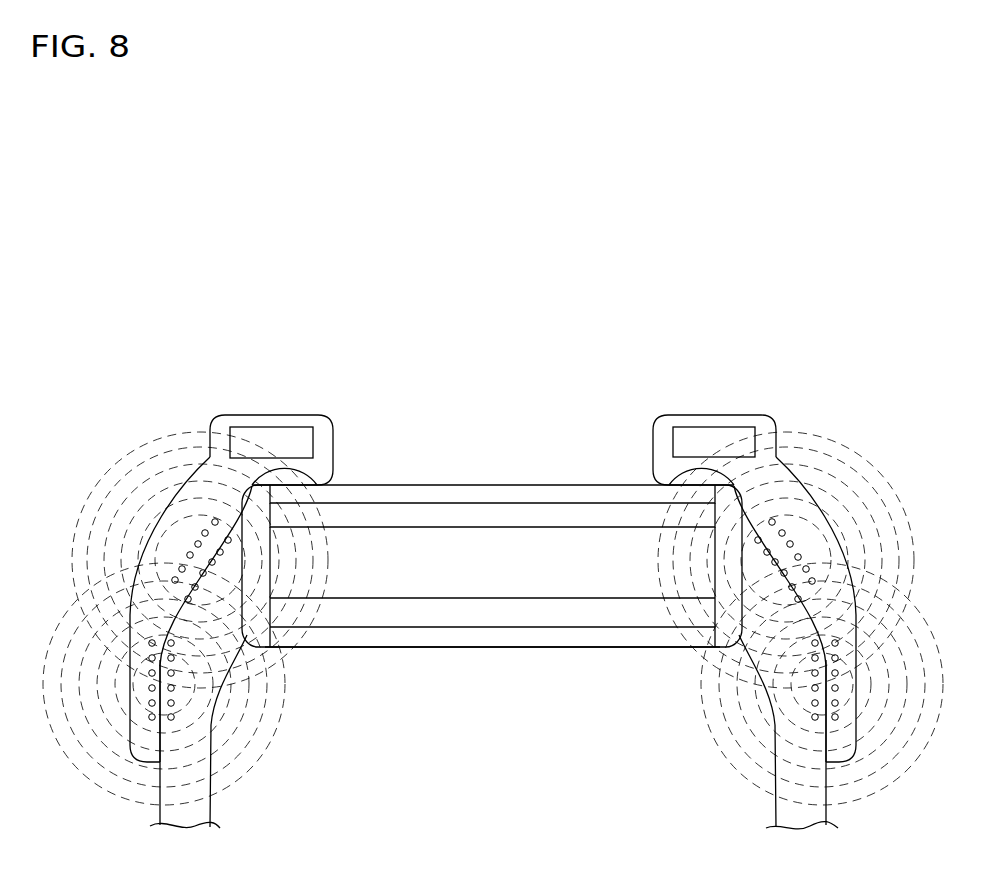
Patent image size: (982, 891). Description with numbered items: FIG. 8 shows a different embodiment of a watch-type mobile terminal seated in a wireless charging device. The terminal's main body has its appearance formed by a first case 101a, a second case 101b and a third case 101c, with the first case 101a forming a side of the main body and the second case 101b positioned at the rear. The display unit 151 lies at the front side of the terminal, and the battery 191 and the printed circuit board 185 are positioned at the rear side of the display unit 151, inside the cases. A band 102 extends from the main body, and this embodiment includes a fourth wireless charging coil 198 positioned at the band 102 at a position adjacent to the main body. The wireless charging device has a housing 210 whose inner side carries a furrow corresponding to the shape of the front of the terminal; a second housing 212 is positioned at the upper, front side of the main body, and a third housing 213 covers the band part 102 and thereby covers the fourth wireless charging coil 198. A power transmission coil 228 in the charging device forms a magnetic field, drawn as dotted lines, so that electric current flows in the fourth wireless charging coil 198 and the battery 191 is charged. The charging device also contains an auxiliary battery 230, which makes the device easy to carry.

The first case 101a is at (722, 644).
The second case 101b is at (653, 640).
The third case 101c is at (303, 481).
The band 102 is at (828, 809).
The display unit 151 is at (503, 513).
The printed circuit board 185 is at (540, 615).
The battery 191 is at (558, 540).
The fourth wireless charging coil 198 is at (816, 719).
The housing 210 is at (187, 489).
The second housing 212 is at (740, 413).
The third housing 213 is at (797, 489).
The power transmission coil 228 is at (813, 582).
The auxiliary battery 230 is at (270, 428).